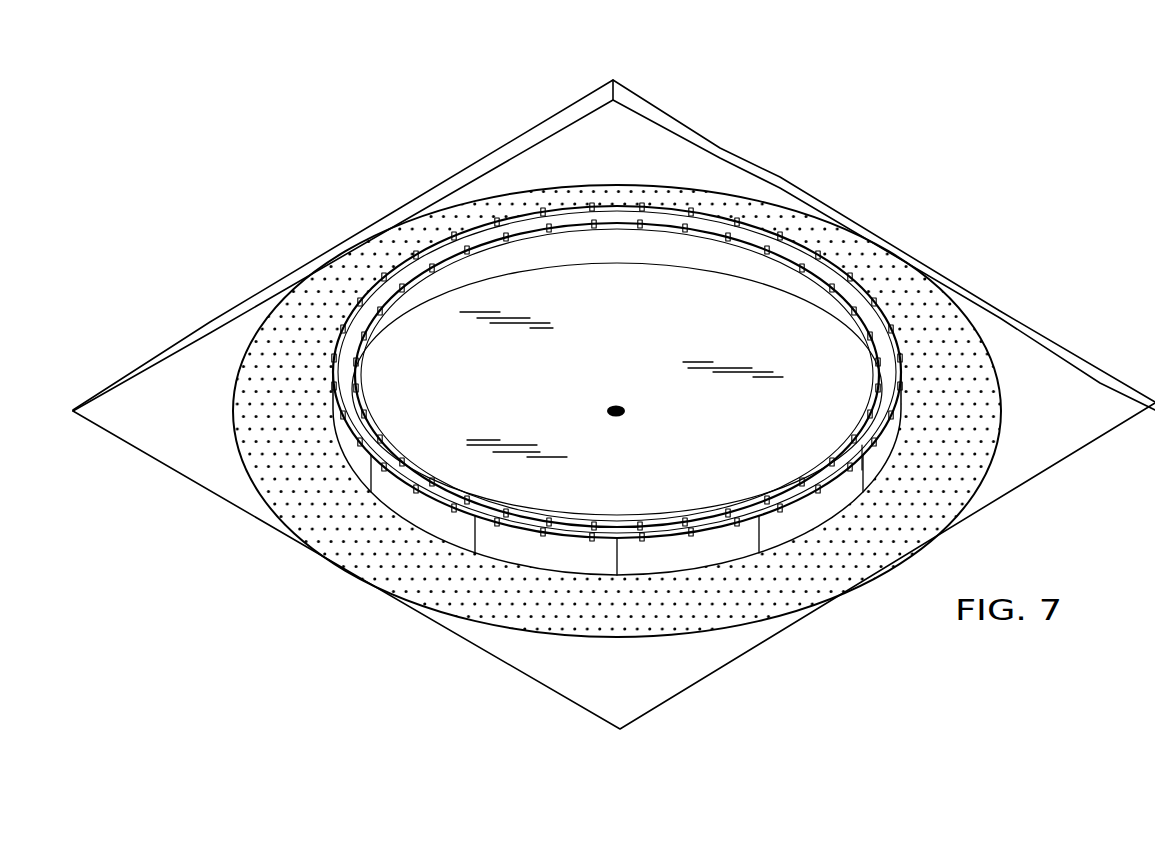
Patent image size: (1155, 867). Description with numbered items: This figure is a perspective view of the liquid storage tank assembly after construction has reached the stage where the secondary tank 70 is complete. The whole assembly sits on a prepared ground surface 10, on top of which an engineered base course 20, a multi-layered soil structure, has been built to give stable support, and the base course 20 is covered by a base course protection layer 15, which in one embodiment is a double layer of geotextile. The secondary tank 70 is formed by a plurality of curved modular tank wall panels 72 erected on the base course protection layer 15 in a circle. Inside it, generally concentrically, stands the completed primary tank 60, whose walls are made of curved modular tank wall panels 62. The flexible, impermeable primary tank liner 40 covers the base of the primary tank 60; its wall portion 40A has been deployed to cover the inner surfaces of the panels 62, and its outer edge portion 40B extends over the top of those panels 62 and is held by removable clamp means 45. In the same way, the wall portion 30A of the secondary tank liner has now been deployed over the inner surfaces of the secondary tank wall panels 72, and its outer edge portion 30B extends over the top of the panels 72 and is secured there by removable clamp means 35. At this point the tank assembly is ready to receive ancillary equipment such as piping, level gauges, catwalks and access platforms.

The prepared ground surface 10 is at (627, 133).
The base course protection layer 15 is at (663, 411).
The engineered base course 20 is at (935, 326).
The wall portion of secondary tank liner 30A is at (623, 331).
The outer edge portion of secondary tank liner 30B is at (573, 537).
The removable clamp means 35 is at (814, 253).
The primary tank liner 40 is at (632, 374).
The wall portion of primary tank liner 40A is at (656, 243).
The outer edge portion of primary tank liner 40B is at (707, 513).
The removable clamp means 45 is at (753, 248).
The primary tank 60 is at (556, 354).
The primary tank wall panels 62 is at (818, 466).
The secondary tank 70 is at (617, 323).
The secondary tank wall panels 72 is at (425, 528).